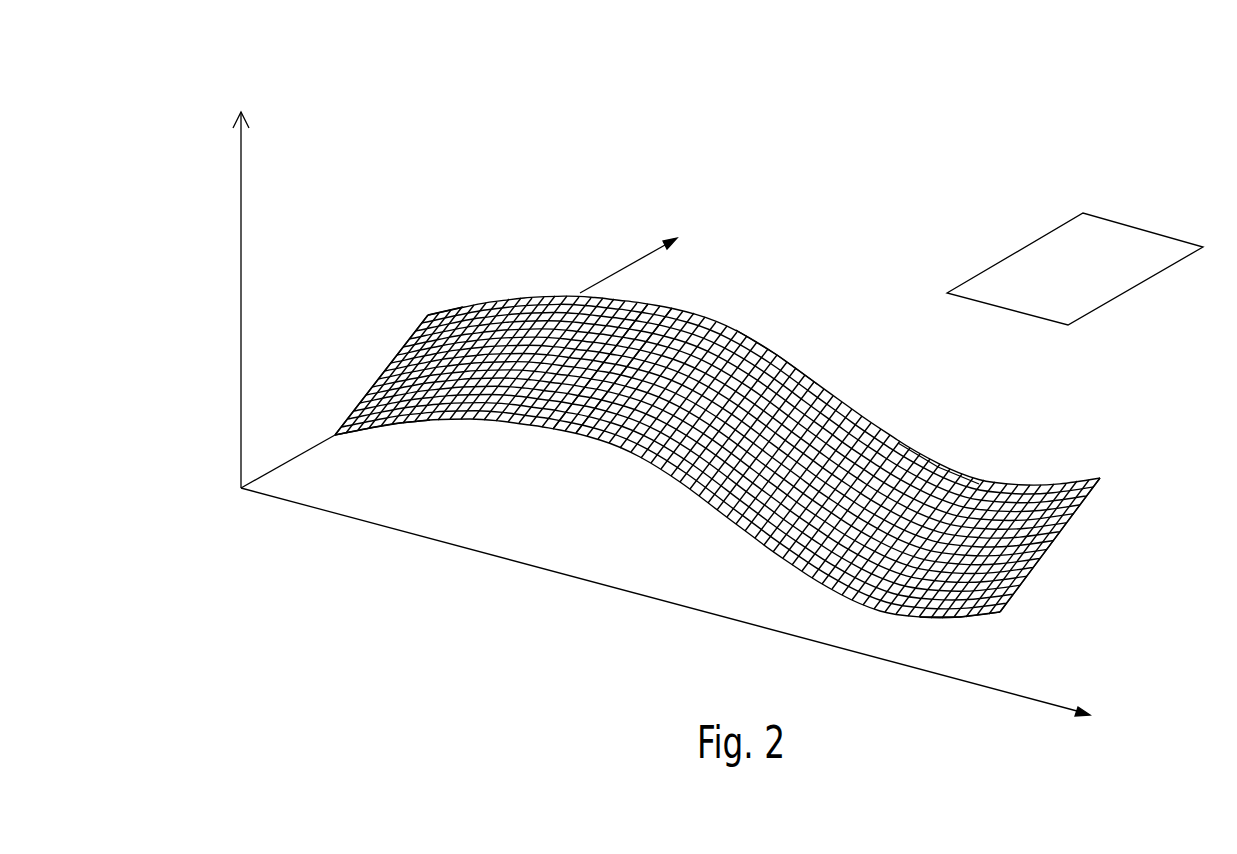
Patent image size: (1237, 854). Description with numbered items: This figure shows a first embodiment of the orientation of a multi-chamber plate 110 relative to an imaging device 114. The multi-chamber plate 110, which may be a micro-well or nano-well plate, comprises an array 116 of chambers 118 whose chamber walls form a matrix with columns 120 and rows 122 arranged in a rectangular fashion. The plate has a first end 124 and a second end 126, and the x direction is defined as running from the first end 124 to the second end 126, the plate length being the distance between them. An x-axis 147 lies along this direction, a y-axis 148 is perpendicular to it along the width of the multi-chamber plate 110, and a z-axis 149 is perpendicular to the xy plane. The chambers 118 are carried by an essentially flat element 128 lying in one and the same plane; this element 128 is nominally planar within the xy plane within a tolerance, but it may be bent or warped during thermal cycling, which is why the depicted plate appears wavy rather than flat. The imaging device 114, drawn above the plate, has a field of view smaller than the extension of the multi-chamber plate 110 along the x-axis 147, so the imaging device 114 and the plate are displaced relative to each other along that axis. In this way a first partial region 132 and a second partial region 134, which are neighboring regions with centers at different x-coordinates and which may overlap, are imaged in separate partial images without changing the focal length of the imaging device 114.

The multi-chamber plate 110 is at (745, 288).
The imaging device 114 is at (1105, 248).
The array of chambers 116 is at (557, 432).
The chambers 118 is at (580, 437).
The columns 120 is at (400, 428).
The rows 122 is at (420, 327).
The first end 124 is at (383, 375).
The second end 126 is at (1057, 540).
The essentially flat element 128 is at (780, 358).
The first partial region 132 is at (1018, 583).
The second partial region 134 is at (933, 467).
The x-axis 147 is at (715, 614).
The y-axis 148 is at (474, 350).
The z-axis 149 is at (266, 280).